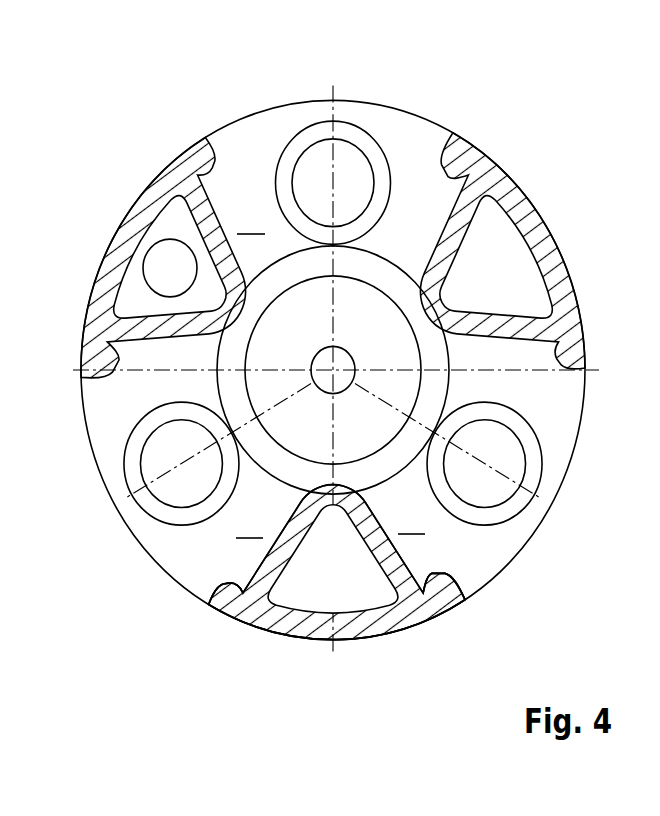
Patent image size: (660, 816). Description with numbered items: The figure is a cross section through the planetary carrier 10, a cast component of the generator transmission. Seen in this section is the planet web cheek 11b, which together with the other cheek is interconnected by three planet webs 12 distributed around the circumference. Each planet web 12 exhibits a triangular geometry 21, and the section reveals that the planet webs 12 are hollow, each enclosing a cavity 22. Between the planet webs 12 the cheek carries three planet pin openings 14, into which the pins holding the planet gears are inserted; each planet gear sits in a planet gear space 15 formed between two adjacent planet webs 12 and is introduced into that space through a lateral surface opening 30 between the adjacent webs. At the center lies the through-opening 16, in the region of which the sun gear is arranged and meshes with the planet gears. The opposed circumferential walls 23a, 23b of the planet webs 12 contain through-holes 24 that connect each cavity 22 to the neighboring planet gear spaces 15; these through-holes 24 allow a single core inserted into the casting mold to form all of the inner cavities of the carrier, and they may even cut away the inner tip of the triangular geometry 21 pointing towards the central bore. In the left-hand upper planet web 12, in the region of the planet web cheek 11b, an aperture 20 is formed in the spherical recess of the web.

The planetary carrier 10 is at (143, 657).
The planet web cheek 11b is at (398, 140).
The planet web 12 is at (175, 160).
The planet pin opening 14 is at (346, 172).
The planet gear space 15 is at (333, 370).
The through-opening 16 is at (342, 438).
The aperture 20 is at (166, 262).
The triangular geometry 21 is at (532, 184).
The cavity 22 is at (503, 267).
The circumferential wall 23a is at (460, 592).
The circumferential wall 23b is at (215, 600).
The through-hole 24 is at (296, 548).
The lateral surface opening 30 is at (258, 112).